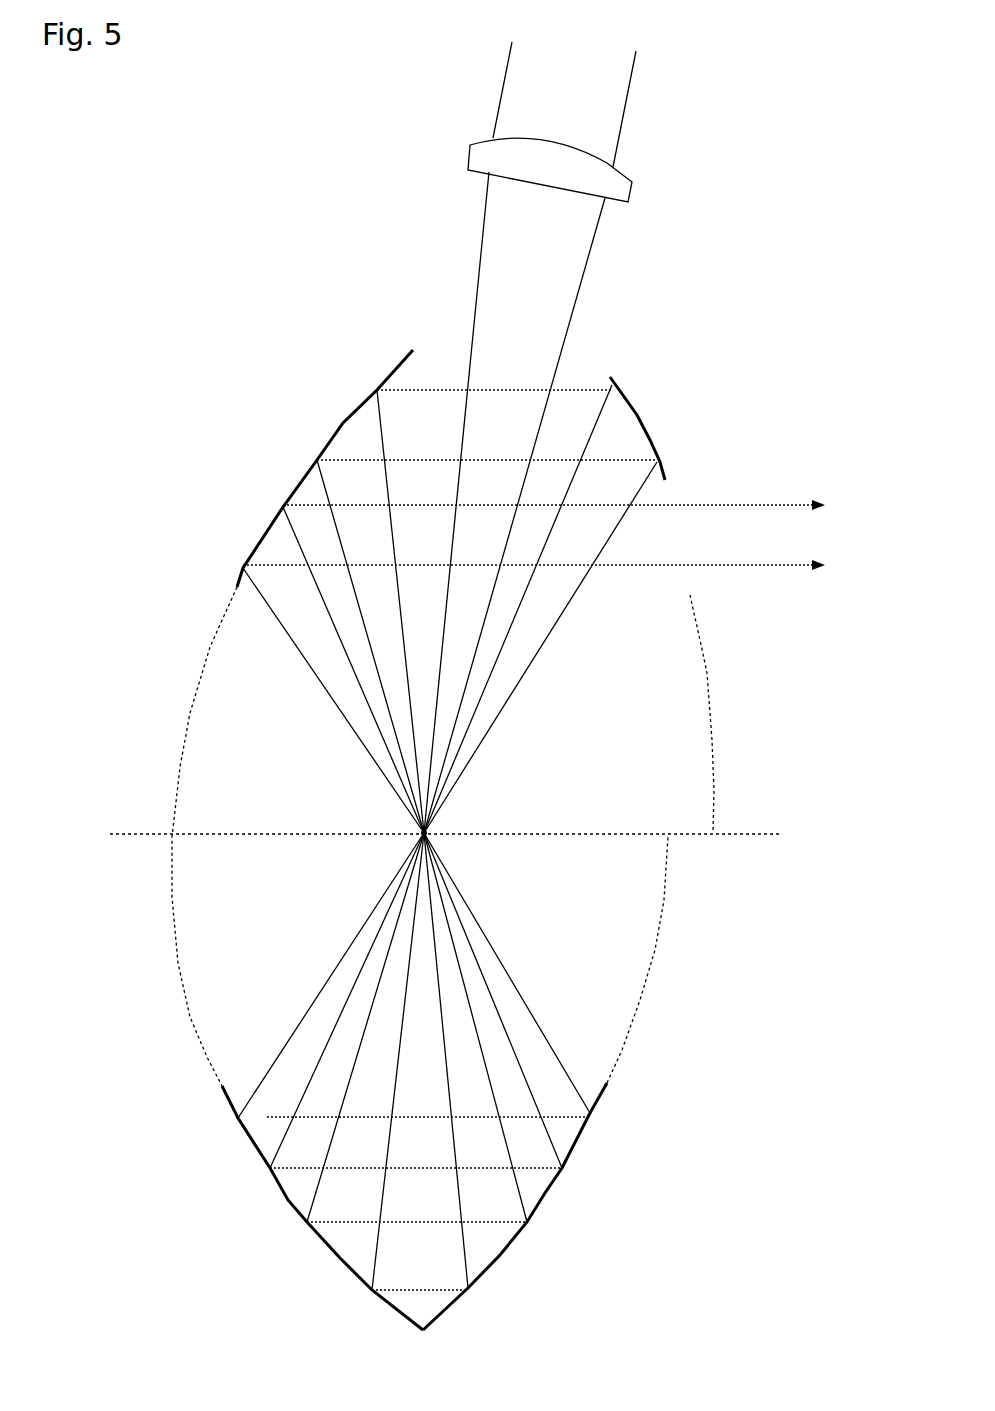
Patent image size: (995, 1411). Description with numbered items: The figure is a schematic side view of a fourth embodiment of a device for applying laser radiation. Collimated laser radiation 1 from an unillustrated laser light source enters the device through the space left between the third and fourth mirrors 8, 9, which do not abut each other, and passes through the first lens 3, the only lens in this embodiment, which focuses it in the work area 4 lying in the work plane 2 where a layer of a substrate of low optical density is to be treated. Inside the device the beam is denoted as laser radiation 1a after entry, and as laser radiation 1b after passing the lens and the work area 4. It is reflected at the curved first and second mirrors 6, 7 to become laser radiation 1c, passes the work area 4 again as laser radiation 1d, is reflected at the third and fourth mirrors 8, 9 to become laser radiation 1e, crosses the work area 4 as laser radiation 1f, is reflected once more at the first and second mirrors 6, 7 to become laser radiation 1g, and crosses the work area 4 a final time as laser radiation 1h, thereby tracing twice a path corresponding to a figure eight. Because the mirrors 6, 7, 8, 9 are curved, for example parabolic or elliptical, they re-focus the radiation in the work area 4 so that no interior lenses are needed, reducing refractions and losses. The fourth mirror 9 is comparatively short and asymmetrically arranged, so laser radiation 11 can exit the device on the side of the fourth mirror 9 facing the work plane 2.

The laser radiation 1 is at (553, 101).
The laser radiation 1a is at (452, 598).
The laser radiation 1b is at (352, 1110).
The laser radiation 1c is at (453, 1110).
The laser radiation 1d is at (357, 598).
The laser radiation 1e is at (535, 598).
The laser radiation 1f is at (257, 1110).
The laser radiation 1g is at (542, 1110).
The laser radiation 1h is at (273, 598).
The work plane 2 is at (737, 832).
The first lens 3 is at (621, 182).
The work area 4 is at (427, 831).
The first mirror 6 is at (545, 1193).
The second mirror 7 is at (282, 1192).
The third mirror 8 is at (343, 423).
The fourth mirror 9 is at (637, 415).
The laser radiation 11 is at (707, 535).